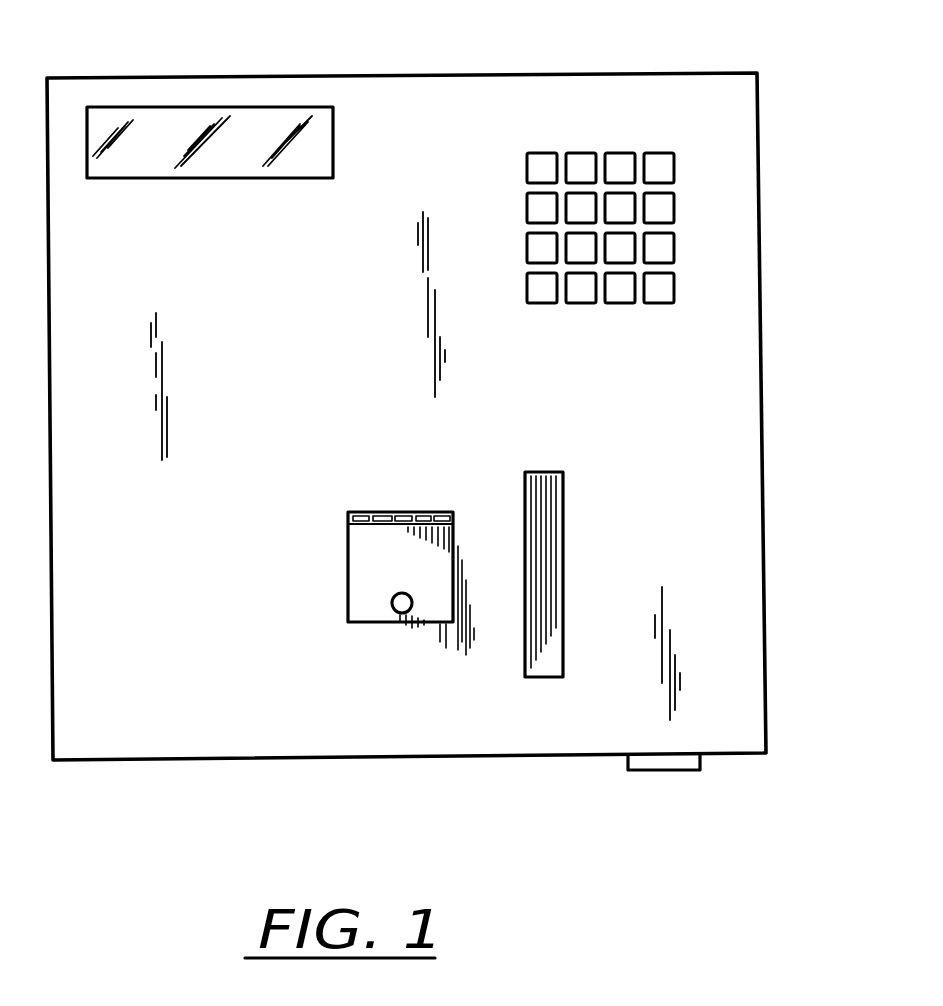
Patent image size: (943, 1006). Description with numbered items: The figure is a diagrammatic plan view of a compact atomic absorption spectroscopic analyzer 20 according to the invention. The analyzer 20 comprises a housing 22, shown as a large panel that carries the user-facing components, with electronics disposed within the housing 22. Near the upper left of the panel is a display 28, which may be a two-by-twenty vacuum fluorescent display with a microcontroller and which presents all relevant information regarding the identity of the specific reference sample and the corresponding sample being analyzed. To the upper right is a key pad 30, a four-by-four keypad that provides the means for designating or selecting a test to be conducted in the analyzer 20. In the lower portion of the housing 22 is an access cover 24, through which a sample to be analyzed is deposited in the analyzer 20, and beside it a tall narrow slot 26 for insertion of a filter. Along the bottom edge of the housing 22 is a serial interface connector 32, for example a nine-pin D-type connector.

The spectroscopic analyzer 20 is at (580, 52).
The housing 22 is at (738, 111).
The access cover 24 is at (365, 576).
The slot 26 is at (555, 526).
The display 28 is at (162, 122).
The key pad 30 is at (675, 218).
The RS-232 interface connector 32 is at (680, 771).